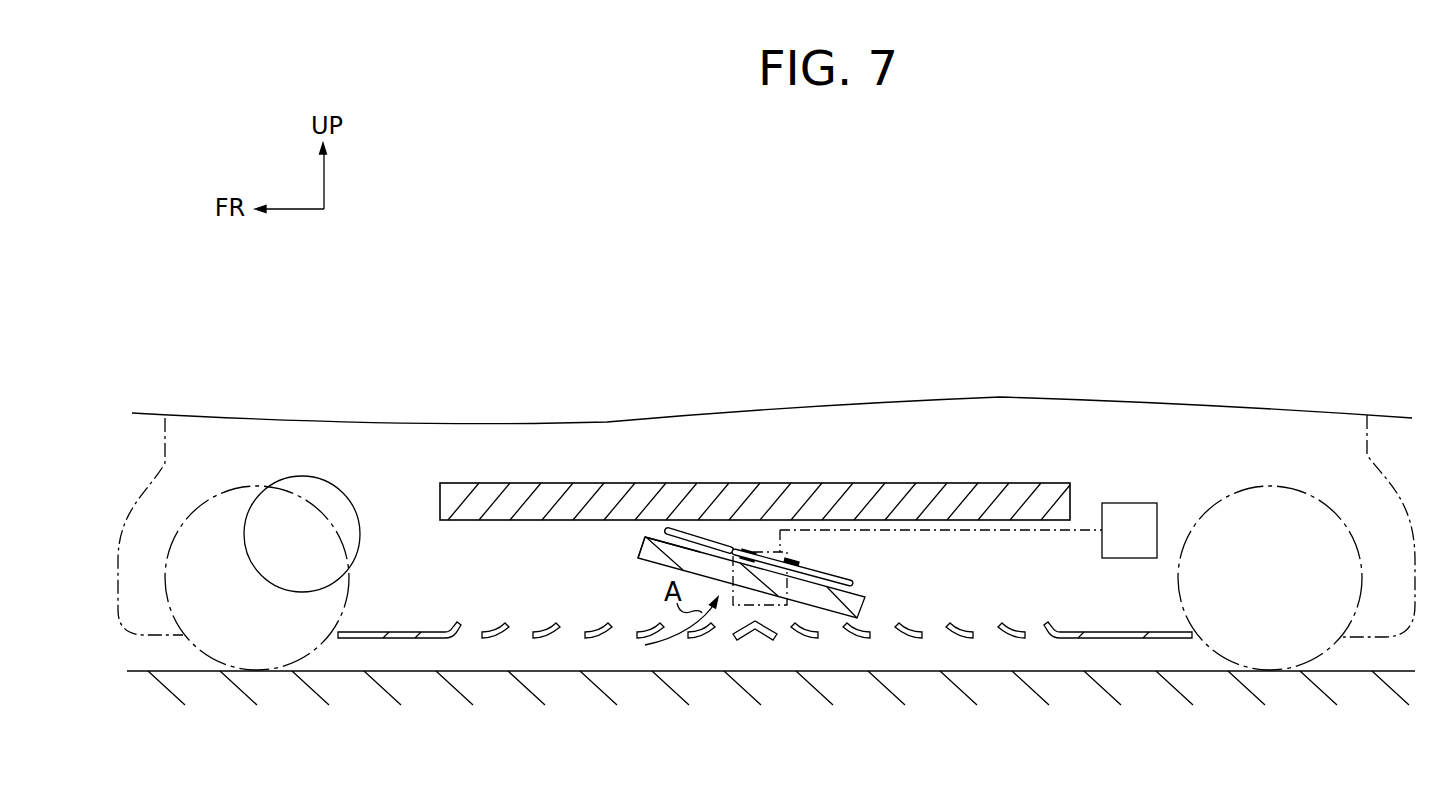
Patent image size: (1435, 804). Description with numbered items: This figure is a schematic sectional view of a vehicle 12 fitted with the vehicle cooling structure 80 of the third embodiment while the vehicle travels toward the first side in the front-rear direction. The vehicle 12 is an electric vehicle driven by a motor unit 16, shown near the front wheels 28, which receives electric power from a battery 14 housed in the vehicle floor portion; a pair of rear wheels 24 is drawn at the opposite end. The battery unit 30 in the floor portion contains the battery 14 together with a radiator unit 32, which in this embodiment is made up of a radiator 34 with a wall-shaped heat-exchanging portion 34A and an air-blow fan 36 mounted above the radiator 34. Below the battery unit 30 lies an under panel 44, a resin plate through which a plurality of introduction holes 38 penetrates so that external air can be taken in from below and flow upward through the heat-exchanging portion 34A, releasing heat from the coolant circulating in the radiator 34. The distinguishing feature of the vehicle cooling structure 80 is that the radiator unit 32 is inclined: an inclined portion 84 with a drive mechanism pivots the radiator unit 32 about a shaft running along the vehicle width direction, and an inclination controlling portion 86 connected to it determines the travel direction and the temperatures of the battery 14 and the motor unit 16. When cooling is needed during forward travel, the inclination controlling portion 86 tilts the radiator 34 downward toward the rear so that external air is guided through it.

The vehicle 12 is at (1367, 455).
The battery 14 is at (848, 480).
The motor unit 16 is at (307, 476).
The rear wheels 24 is at (1295, 487).
The front wheels 28 is at (213, 495).
The battery unit 30 is at (1075, 470).
The radiator unit 32 is at (629, 547).
The radiator 34 is at (867, 608).
The heat-exchanging portion 34A is at (660, 572).
The air-blow fan 36 is at (845, 574).
The introduction holes 38 is at (472, 636).
The under panel 44 is at (428, 650).
The vehicle cooling structure 80 is at (1015, 440).
The inclined portion 84 is at (785, 550).
The inclination controlling portion 86 is at (1157, 522).